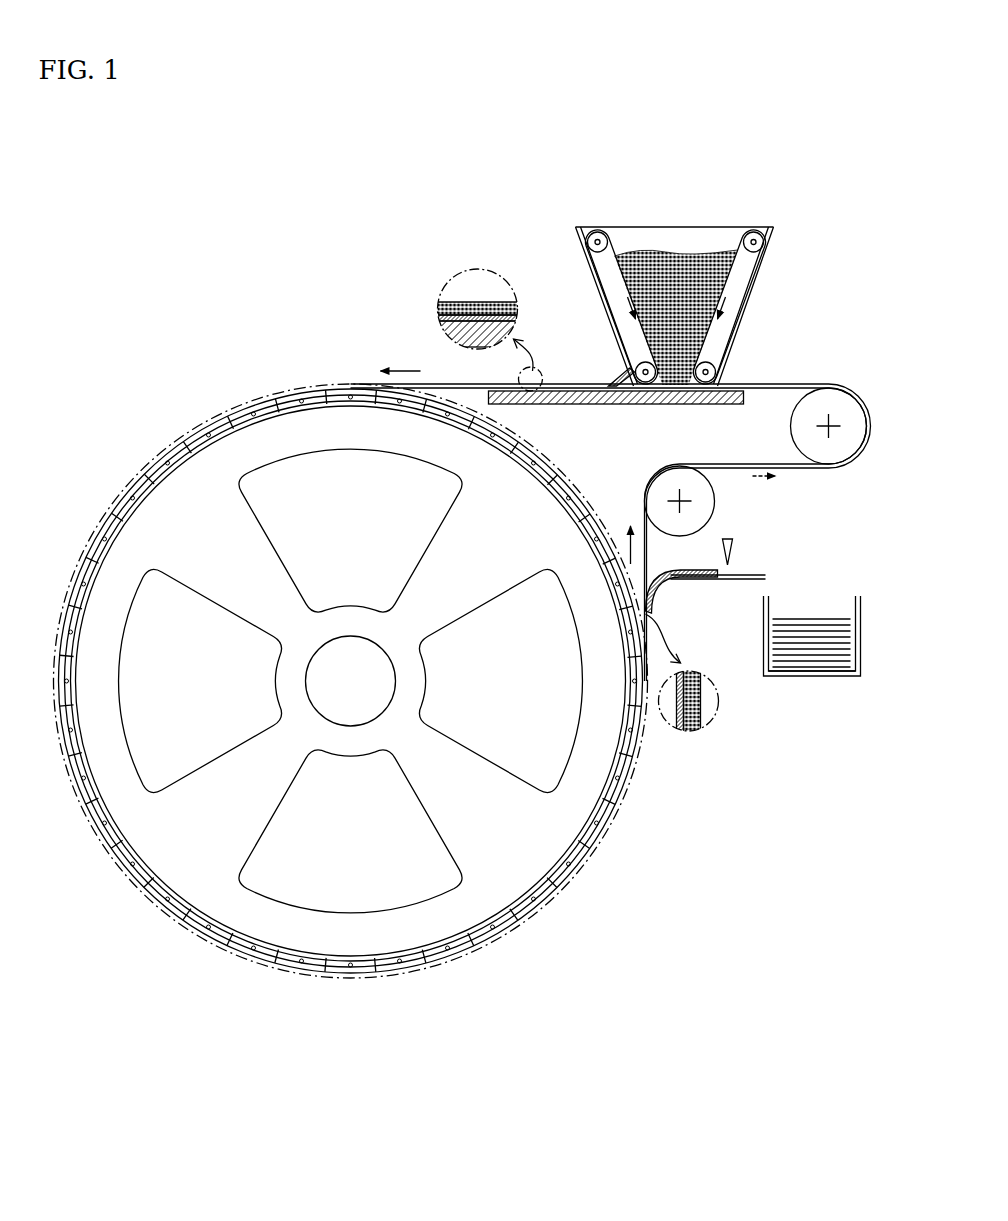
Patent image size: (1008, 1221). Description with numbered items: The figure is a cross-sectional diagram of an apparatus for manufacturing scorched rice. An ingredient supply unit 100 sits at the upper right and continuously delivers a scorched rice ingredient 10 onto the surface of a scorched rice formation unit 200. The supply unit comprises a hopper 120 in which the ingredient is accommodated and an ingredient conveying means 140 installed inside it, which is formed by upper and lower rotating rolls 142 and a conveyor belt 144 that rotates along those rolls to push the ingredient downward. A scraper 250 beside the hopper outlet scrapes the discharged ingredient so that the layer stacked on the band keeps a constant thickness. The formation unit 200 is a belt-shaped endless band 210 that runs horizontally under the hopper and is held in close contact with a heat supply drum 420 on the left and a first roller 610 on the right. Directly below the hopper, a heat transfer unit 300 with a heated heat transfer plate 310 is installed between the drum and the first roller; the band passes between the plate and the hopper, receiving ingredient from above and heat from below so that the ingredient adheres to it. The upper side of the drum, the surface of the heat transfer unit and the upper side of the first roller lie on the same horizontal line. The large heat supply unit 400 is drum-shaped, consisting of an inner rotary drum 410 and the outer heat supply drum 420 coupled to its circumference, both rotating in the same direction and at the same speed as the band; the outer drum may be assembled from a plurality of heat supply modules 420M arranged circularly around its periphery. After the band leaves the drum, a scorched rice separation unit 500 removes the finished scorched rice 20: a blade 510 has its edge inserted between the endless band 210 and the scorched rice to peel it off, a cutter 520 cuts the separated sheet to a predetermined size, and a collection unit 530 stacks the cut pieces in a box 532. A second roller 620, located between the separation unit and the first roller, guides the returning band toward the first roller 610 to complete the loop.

The scorched rice ingredient 10 is at (672, 255).
The scorched rice 20 is at (775, 575).
The ingredient supply unit 100 is at (659, 446).
The hopper 120 is at (582, 271).
The ingredient conveying means 140 is at (736, 282).
The rotating rolls 142 is at (757, 243).
The conveyor belt 144 is at (748, 262).
The scorched rice formation unit 200 is at (471, 611).
The endless band 210 is at (445, 303).
The scraper 250 is at (610, 373).
The heat transfer unit 300 is at (542, 396).
The heat transfer plate 310 is at (445, 325).
The heat supply unit 400 is at (380, 718).
The rotary drum 410 is at (387, 942).
The heat supply drum 420 is at (380, 711).
The heat supply modules 420M is at (478, 955).
The scorched rice separation unit 500 is at (762, 618).
The blade 510 is at (690, 580).
The cutter 520 is at (729, 540).
The collection unit 530 is at (821, 632).
The box 532 is at (830, 678).
The first roller 610 is at (836, 450).
The second roller 620 is at (704, 488).